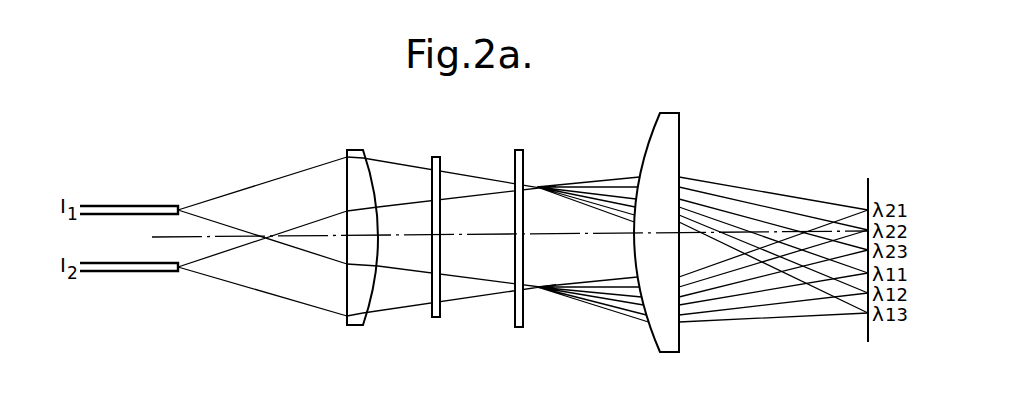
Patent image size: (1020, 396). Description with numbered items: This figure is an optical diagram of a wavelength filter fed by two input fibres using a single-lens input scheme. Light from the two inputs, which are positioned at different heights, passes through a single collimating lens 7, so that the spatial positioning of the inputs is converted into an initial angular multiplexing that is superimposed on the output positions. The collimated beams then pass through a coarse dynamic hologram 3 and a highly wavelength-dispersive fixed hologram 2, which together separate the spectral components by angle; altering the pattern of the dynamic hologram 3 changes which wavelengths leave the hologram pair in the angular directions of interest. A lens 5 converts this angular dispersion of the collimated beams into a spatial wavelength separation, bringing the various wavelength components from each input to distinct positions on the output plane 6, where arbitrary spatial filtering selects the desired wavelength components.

The fixed hologram 2 is at (525, 155).
The dynamic hologram 3 is at (440, 157).
The lens 5 is at (680, 127).
The output plane 6 is at (869, 182).
The collimating lens 7 is at (355, 168).